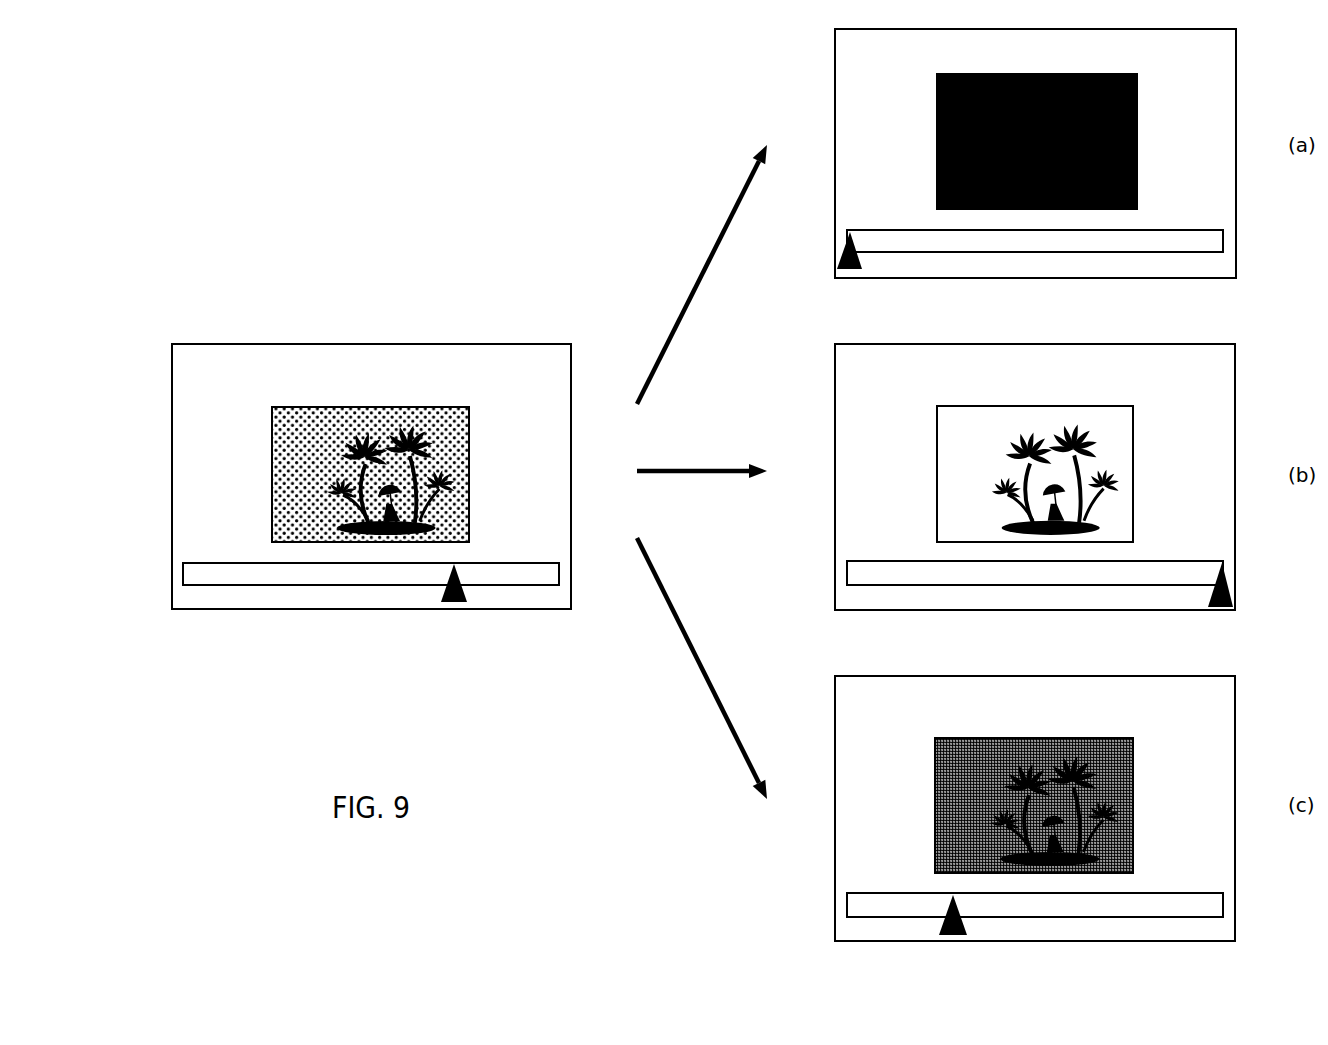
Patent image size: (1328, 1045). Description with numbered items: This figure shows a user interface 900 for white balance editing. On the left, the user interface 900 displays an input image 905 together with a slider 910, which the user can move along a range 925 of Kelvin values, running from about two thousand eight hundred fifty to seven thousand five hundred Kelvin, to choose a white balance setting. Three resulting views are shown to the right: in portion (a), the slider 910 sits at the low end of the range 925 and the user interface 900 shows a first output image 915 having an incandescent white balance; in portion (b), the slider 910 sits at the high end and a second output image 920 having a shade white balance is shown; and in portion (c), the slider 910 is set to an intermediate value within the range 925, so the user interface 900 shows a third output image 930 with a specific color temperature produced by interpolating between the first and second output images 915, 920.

The user interface 900 is at (172, 416).
The input image 905 is at (272, 450).
The slider 910 is at (443, 597).
The first output image 915 is at (937, 118).
The second output image 920 is at (937, 451).
The range 925 is at (185, 573).
The third output image 930 is at (935, 782).